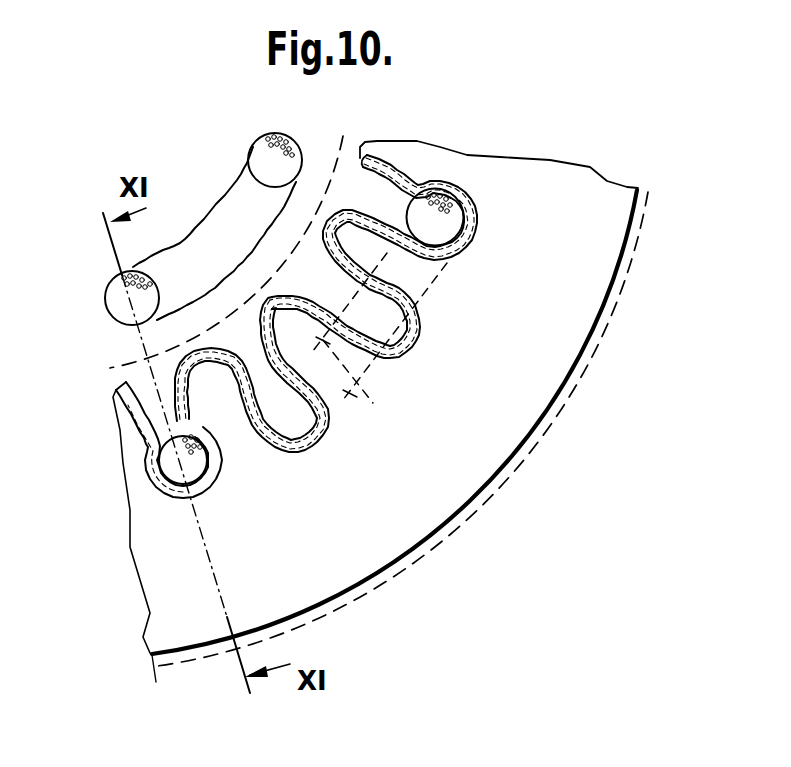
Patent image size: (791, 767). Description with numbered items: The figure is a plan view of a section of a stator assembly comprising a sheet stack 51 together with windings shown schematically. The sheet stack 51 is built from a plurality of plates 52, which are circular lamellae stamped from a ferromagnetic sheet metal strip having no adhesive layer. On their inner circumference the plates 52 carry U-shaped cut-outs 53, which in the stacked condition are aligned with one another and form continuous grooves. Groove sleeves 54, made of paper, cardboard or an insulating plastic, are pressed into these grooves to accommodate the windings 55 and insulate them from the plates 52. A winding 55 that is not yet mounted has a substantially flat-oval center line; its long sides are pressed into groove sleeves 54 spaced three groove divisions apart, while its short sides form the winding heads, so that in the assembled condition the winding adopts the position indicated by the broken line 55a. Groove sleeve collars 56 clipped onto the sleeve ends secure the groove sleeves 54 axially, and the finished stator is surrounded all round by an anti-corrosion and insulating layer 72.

The sheet stack 51 is at (118, 545).
The plates 52 is at (428, 158).
The U-shaped cut-outs 53 is at (390, 200).
The groove sleeves 54 is at (186, 378).
The windings 55 is at (130, 305).
The broken line 55a is at (367, 410).
The groove sleeve collars 56 is at (208, 478).
The anti-corrosion and insulating layer 72 is at (352, 192).